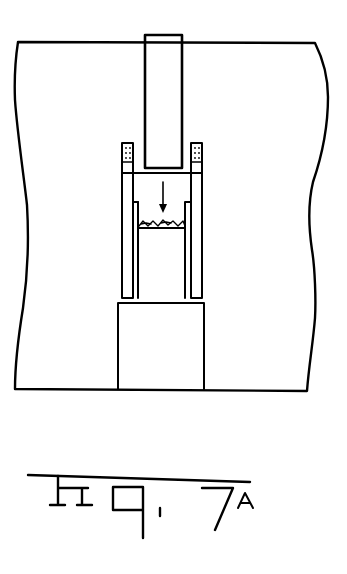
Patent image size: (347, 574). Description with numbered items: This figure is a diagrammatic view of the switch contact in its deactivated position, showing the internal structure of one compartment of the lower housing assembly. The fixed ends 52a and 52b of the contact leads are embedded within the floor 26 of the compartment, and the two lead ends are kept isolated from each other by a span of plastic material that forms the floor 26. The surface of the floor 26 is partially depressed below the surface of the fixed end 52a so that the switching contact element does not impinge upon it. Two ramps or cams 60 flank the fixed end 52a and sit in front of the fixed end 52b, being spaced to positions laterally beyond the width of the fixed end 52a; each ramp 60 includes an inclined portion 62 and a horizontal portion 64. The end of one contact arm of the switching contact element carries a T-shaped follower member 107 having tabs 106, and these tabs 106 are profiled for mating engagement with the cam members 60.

The floor 26 is at (265, 285).
The fixed end 52a is at (173, 99).
The fixed end 52b is at (182, 335).
The ramps or cams 60 is at (130, 251).
The inclined portions 62 is at (198, 153).
The horizontal portions 64 is at (196, 217).
The tabs 106 is at (127, 185).
The T-shaped follower member 107 is at (130, 198).